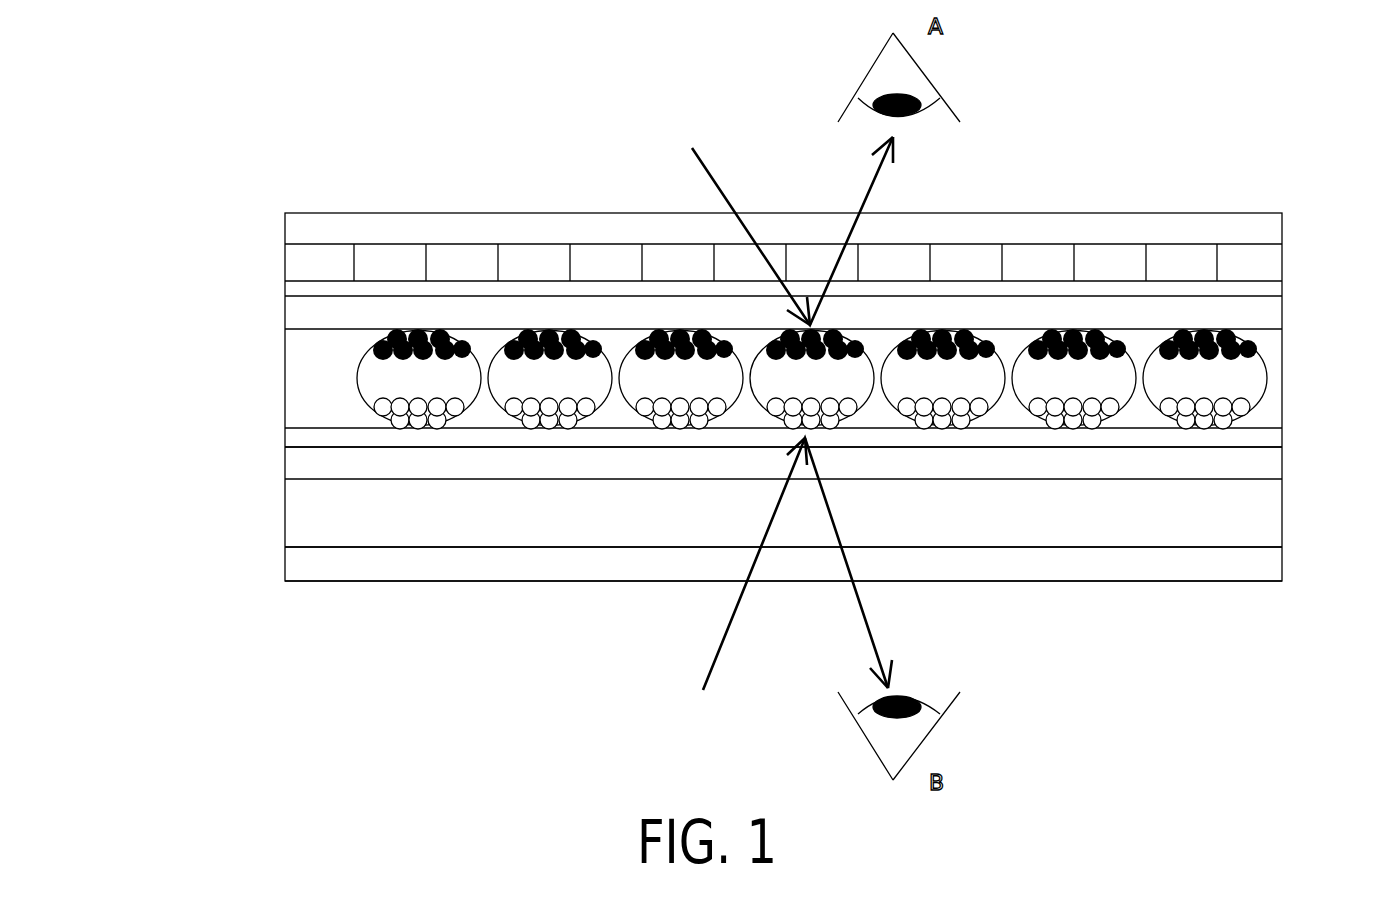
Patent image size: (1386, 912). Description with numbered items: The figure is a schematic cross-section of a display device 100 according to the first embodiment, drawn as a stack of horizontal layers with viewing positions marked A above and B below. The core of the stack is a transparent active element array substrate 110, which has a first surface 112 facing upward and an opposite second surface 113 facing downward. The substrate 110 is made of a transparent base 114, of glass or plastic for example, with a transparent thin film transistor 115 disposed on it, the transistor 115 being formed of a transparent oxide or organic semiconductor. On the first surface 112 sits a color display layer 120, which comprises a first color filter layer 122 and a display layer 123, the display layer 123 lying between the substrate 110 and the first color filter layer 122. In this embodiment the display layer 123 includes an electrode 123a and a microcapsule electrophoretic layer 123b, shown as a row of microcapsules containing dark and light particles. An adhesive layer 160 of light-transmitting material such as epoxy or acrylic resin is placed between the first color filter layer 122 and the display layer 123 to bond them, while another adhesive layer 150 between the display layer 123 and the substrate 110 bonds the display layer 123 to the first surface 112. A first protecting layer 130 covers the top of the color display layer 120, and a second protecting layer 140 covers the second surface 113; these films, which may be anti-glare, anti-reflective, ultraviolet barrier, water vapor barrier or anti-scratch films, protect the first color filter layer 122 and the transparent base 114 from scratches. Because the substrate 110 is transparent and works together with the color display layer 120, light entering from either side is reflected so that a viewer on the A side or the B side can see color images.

The display device 100 is at (1332, 682).
The transparent active element array substrate 110 is at (190, 445).
The first surface 112 is at (1260, 445).
The second surface 113 is at (1258, 548).
The transparent base 114 is at (293, 518).
The transparent thin film transistor 115 is at (293, 467).
The color display layer 120 is at (136, 243).
The first color filter layer 122 is at (285, 265).
The display layer 123 is at (713, 373).
The electrode 123a is at (297, 318).
The microcapsule electrophoretic layer 123b is at (312, 405).
The first protecting layer 130 is at (293, 225).
The second protecting layer 140 is at (293, 567).
The adhesive layer 150 is at (1277, 433).
The adhesive layer 160 is at (1273, 288).